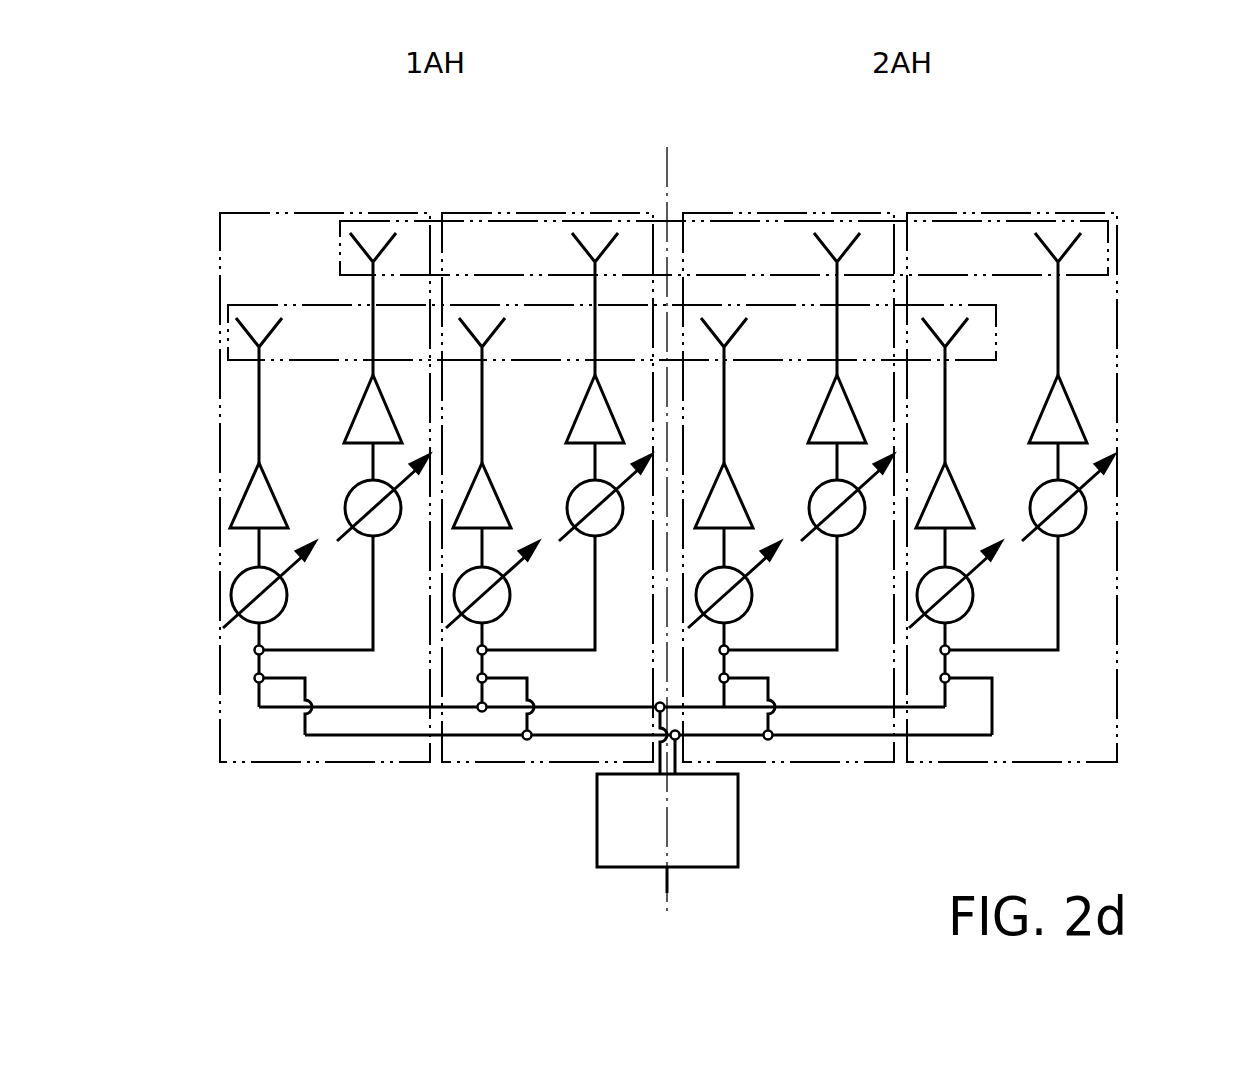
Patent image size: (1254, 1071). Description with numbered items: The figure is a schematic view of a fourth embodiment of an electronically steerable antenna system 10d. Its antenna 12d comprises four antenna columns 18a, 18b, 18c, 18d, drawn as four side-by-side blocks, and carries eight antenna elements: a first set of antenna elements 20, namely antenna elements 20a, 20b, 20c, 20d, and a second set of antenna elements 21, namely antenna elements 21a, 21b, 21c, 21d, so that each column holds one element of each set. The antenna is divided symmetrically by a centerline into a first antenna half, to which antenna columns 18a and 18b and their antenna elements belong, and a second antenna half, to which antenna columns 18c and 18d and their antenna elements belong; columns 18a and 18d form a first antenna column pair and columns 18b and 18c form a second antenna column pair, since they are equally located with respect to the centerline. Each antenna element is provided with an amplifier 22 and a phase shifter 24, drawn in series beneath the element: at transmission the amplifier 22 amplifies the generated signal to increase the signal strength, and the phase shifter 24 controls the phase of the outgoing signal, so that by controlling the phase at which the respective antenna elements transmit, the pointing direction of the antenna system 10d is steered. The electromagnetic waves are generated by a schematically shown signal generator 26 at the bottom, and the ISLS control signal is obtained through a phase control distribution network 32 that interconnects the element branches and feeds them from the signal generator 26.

The electronically steerable antenna system 10d is at (624, 97).
The antenna 12d is at (250, 100).
The antenna column 18a is at (390, 212).
The antenna column 18b is at (613, 212).
The antenna column 18c is at (852, 212).
The antenna column 18d is at (1075, 212).
The antenna elements 20 is at (229, 339).
The antenna elements 21 is at (1108, 242).
The antenna element 20a is at (253, 352).
The antenna element 20b is at (476, 352).
The antenna element 20c is at (730, 352).
The antenna element 20d is at (948, 352).
The antenna element 21a is at (368, 268).
The antenna element 21b is at (590, 268).
The antenna element 21c is at (852, 268).
The antenna element 21d is at (1062, 268).
The amplifier 22 is at (962, 493).
The phase shifter 24 is at (1087, 510).
The signal generator 26 is at (738, 822).
The phase control distribution network 32 is at (940, 737).